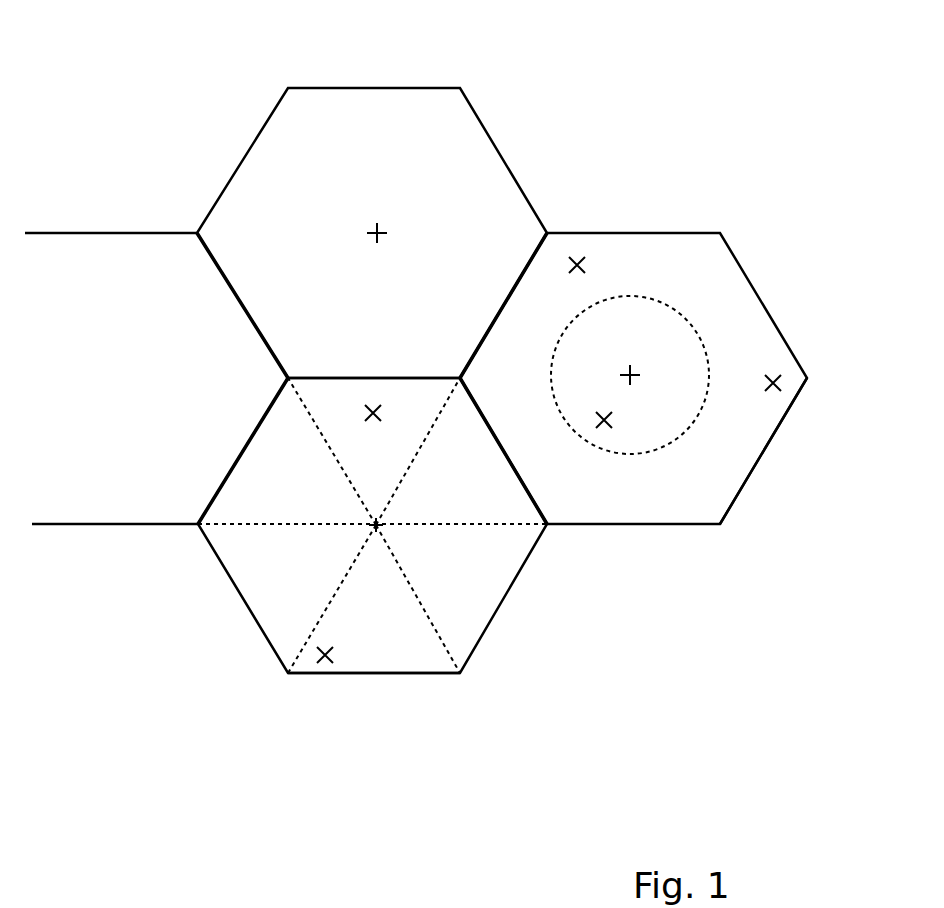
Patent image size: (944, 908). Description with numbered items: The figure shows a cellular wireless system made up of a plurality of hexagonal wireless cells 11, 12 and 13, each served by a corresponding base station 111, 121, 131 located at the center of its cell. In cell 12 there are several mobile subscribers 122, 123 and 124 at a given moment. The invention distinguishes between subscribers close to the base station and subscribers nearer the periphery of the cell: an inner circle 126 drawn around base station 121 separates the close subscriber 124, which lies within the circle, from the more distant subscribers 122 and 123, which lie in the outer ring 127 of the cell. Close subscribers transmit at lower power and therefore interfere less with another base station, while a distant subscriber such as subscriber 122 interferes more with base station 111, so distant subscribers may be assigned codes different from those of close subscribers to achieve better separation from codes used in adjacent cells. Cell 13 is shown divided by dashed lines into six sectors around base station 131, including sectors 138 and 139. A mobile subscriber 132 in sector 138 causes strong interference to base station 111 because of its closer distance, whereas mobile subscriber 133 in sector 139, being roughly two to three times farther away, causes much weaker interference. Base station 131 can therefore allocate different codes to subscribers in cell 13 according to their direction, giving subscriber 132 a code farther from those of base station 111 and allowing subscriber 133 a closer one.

The wireless cell 11 is at (397, 88).
The wireless cell 12 is at (663, 232).
The wireless cell 13 is at (497, 608).
The base station 111 is at (377, 231).
The base station 121 is at (632, 372).
The mobile subscriber 122 is at (575, 262).
The mobile subscriber 123 is at (788, 383).
The mobile subscriber 124 is at (606, 422).
The inner circle 126 is at (716, 370).
The outer ring 127 is at (742, 432).
The base station 131 is at (373, 527).
The mobile subscriber 132 is at (372, 412).
The mobile subscriber 133 is at (330, 660).
The sector 138 is at (333, 427).
The sector 139 is at (410, 657).